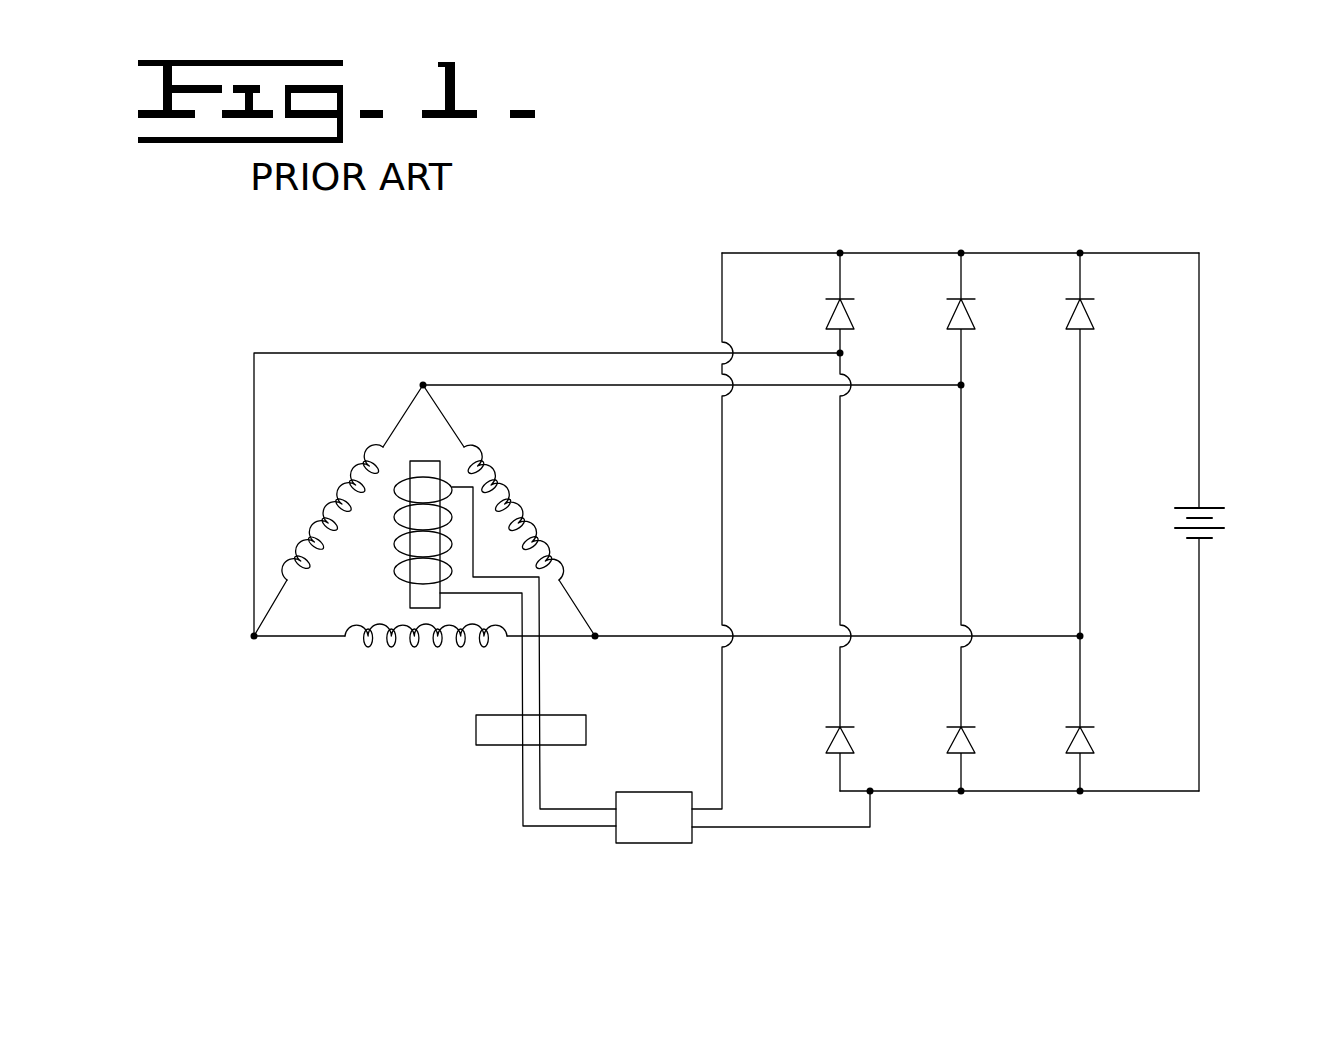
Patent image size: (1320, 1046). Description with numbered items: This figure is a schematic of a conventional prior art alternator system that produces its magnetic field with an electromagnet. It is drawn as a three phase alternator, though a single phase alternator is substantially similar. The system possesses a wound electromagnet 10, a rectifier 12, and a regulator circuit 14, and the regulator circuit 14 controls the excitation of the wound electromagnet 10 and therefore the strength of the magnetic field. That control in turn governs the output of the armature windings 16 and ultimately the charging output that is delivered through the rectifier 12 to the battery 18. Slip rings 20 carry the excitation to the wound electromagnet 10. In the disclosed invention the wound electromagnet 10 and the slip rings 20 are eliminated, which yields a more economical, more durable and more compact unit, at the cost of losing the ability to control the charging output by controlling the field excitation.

The wound electromagnet 10 is at (385, 559).
The rectifier 12 is at (823, 245).
The regulator circuit 14 is at (638, 843).
The armature windings 16 is at (540, 501).
The battery 18 is at (1219, 493).
The slip rings 20 is at (476, 729).